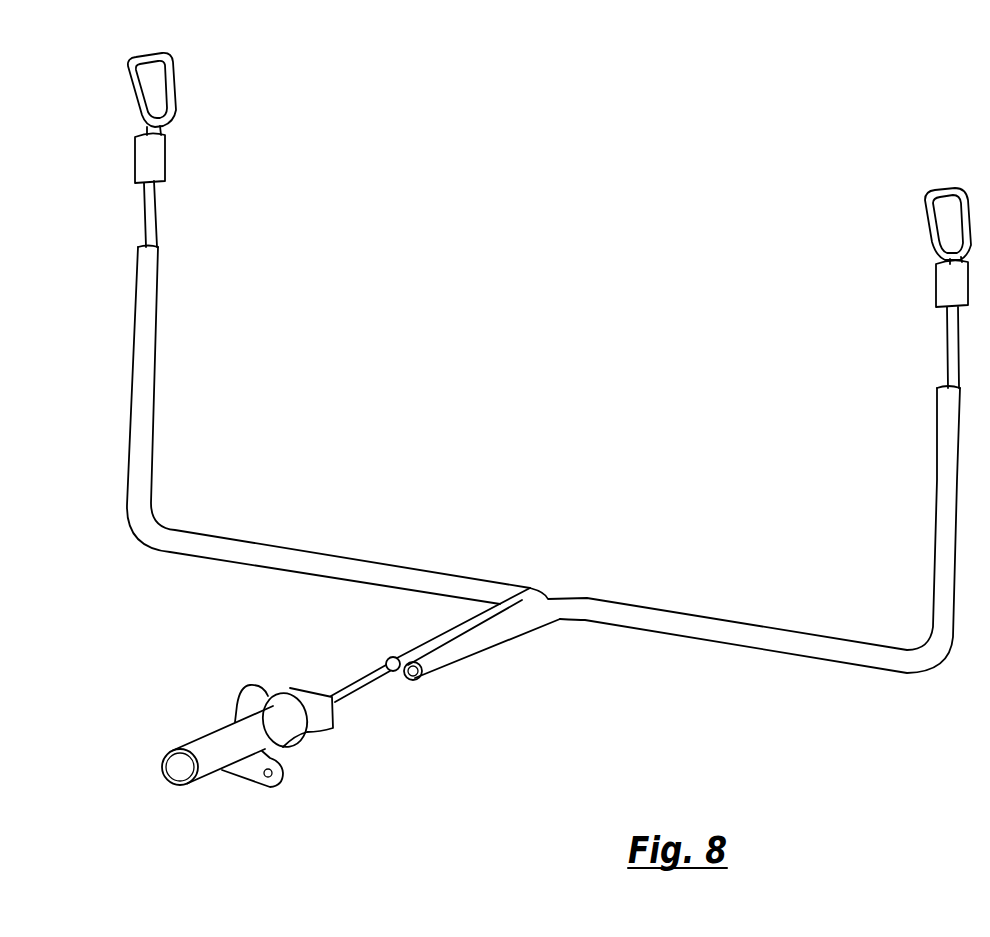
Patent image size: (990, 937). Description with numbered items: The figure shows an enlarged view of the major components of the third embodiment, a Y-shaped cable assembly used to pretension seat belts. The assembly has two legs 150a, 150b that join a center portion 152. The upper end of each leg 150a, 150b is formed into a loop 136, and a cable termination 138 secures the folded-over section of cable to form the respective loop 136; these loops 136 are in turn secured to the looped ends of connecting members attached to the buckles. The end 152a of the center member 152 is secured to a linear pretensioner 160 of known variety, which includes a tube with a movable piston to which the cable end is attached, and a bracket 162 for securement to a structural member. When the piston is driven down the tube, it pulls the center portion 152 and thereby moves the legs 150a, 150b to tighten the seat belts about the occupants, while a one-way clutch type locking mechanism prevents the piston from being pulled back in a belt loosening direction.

The loop 136 is at (168, 80).
The cable termination 138 is at (160, 157).
The leg 150a is at (322, 560).
The leg 150b is at (732, 632).
The center portion 152 is at (370, 682).
The end of center member 152a is at (350, 688).
The linear pretensioner 160 is at (237, 743).
The bracket 162 is at (280, 782).